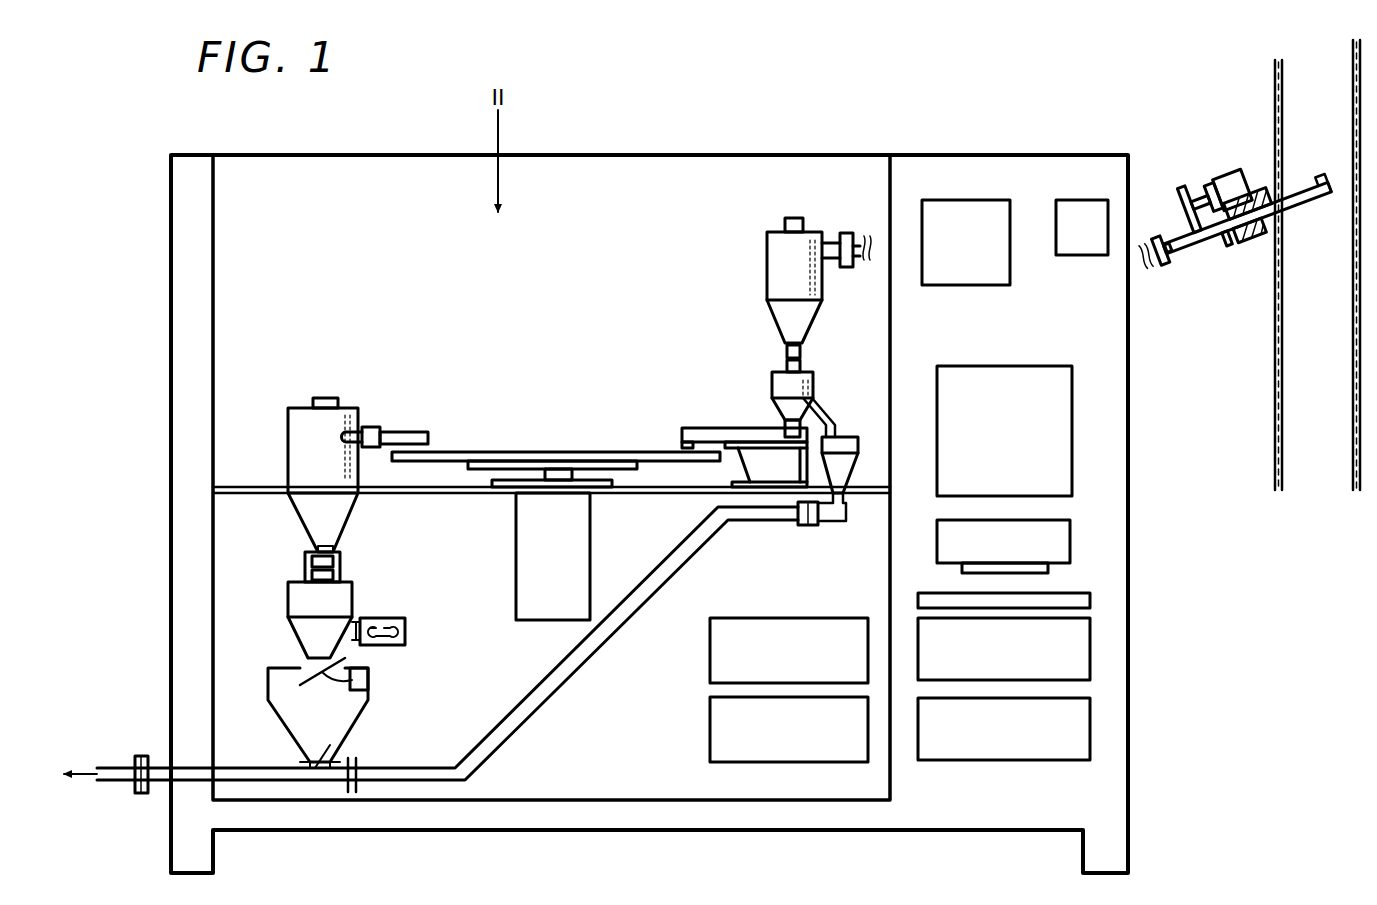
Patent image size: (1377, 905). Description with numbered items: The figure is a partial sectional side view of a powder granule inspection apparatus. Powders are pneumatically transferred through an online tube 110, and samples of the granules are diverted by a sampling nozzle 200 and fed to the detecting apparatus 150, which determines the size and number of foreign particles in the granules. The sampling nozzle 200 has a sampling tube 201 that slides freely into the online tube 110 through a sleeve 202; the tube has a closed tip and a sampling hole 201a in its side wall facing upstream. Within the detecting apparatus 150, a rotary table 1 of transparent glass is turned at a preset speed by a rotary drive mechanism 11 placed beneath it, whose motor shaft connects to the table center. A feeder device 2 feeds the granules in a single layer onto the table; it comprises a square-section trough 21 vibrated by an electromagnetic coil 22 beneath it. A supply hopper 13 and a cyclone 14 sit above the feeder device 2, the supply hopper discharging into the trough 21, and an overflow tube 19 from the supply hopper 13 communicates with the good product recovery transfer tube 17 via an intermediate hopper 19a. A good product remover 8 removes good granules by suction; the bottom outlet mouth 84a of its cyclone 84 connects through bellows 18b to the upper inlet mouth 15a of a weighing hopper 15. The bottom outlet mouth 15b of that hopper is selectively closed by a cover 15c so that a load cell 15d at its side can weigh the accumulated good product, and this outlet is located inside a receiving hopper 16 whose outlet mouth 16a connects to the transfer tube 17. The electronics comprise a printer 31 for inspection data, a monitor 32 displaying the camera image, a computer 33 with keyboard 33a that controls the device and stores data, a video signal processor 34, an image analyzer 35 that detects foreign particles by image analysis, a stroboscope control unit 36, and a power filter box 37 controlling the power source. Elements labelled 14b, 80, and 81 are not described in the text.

The detecting apparatus 150 is at (638, 243).
The rotary table 1 is at (578, 451).
The feeder device 2 is at (724, 407).
The good product remover 8 is at (297, 418).
The rotary drive mechanism 11 is at (516, 540).
The supply hopper 13 is at (817, 381).
The cyclone 14 is at (836, 217).
The hopper inlet 14b is at (792, 216).
The weighing hopper 15 is at (339, 615).
The upper inlet mouth 15a is at (338, 578).
The bottom outlet mouth 15b is at (305, 665).
The cover 15c is at (355, 679).
The load cell 15d is at (400, 621).
The receiving hopper 16 is at (361, 707).
The outlet mouth 16a is at (335, 751).
The good product recovery transfer tube 17 is at (278, 781).
The bellows 18b is at (305, 566).
The overflow tube 19 is at (842, 477).
The intermediate hopper 19a is at (853, 476).
The trough 21 is at (695, 427).
The electromagnetic coil 22 is at (748, 466).
The printer 31 is at (1080, 199).
The monitor 32 is at (965, 199).
The computer 33 is at (1072, 452).
The keyboard 33a is at (1090, 600).
The video signal processor 34 is at (1090, 660).
The image analyzer 35 is at (1090, 745).
The stroboscope control unit 36 is at (755, 617).
The power filter box 37 is at (710, 750).
The suction nozzle unit 80 is at (402, 381).
The suction rod 81 is at (415, 433).
The cyclone 84 is at (290, 431).
The bottom outlet mouth 84a is at (312, 548).
The online tube 110 is at (64, 754).
The sampling nozzle 200 is at (1240, 265).
The sampling tube 201 is at (1252, 204).
The sampling hole 201a is at (1290, 146).
The sleeve 202 is at (1258, 271).